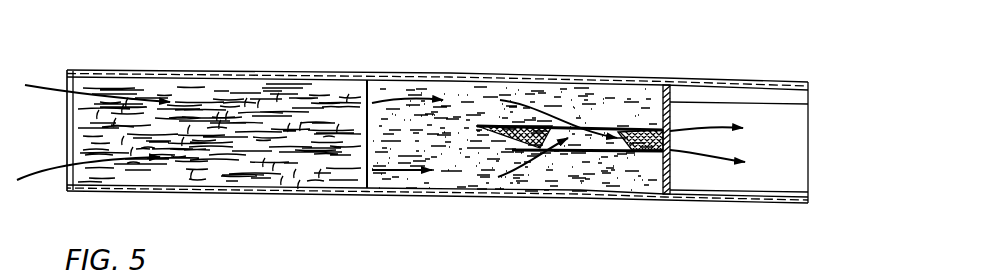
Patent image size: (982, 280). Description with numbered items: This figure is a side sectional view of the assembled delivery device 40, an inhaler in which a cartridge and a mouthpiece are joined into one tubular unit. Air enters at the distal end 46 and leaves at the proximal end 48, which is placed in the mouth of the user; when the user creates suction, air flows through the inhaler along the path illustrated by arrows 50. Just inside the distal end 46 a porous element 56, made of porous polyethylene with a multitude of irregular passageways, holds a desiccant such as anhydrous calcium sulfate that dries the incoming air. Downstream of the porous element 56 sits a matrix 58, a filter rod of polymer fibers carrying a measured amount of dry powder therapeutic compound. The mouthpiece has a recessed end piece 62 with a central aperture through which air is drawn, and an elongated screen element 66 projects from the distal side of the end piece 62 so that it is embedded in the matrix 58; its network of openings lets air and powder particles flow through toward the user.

The device 40 is at (548, 78).
The distal end 46 is at (64, 70).
The proximal end 48 is at (820, 93).
The arrows 50 is at (56, 90).
The porous element 56 is at (245, 87).
The matrix 58 is at (468, 92).
The recessed end piece 62 is at (673, 100).
The screen element 66 is at (587, 155).